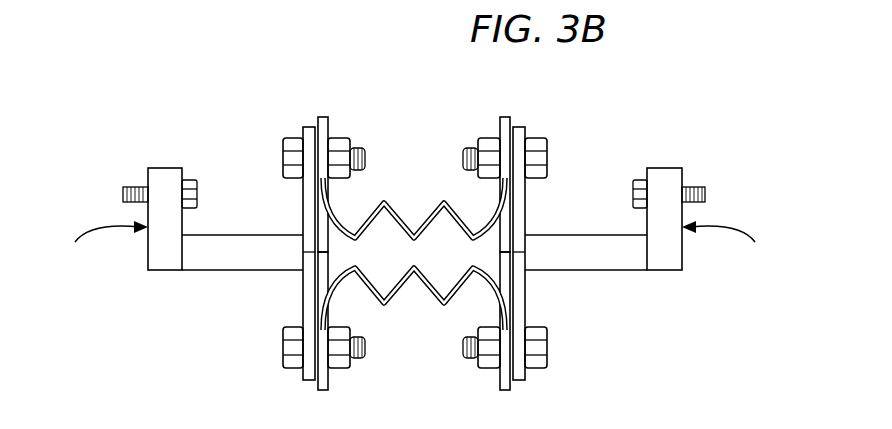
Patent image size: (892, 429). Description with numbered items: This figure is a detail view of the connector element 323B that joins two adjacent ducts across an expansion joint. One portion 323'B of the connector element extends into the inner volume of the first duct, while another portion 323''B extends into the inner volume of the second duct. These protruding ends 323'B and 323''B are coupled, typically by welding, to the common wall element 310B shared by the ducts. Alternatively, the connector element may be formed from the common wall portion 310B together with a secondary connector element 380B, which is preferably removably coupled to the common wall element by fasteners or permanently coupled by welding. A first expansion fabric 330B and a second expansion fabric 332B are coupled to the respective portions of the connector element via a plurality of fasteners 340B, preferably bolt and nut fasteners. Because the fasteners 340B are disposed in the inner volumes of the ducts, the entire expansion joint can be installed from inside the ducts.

The connector element 323B is at (400, 197).
The first portion of the connector element 323'B is at (416, 184).
The second portion of the connector element 323''B is at (417, 321).
The first expansion fabric 330B is at (410, 202).
The second expansion fabric 332B is at (423, 300).
The bolt and nut fasteners 340B is at (290, 137).
The common wall element 310B is at (196, 273).
The secondary connector element 380B is at (415, 246).